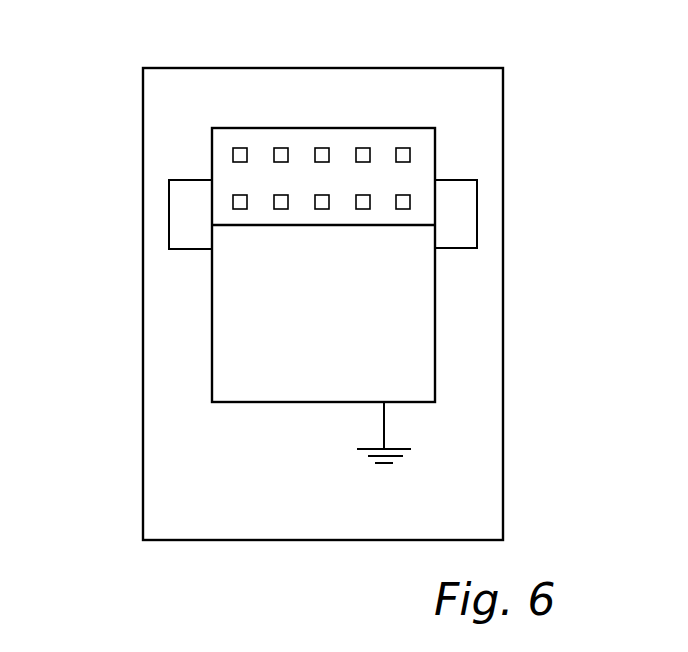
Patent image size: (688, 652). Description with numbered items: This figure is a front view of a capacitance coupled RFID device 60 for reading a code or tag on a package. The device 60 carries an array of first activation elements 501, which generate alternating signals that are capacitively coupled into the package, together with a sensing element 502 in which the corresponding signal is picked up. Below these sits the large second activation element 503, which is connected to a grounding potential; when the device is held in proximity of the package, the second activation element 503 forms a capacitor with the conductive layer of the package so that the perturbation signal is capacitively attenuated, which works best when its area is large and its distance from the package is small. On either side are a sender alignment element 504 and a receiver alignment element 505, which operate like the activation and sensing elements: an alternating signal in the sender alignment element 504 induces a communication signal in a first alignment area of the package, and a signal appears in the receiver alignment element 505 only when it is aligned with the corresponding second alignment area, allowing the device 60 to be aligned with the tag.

The device 60 is at (528, 69).
The first activation element 501 is at (403, 149).
The sensing element 502 is at (410, 203).
The second activation element 503 is at (410, 375).
The sender alignment element 504 is at (175, 212).
The receiver alignment element 505 is at (478, 206).